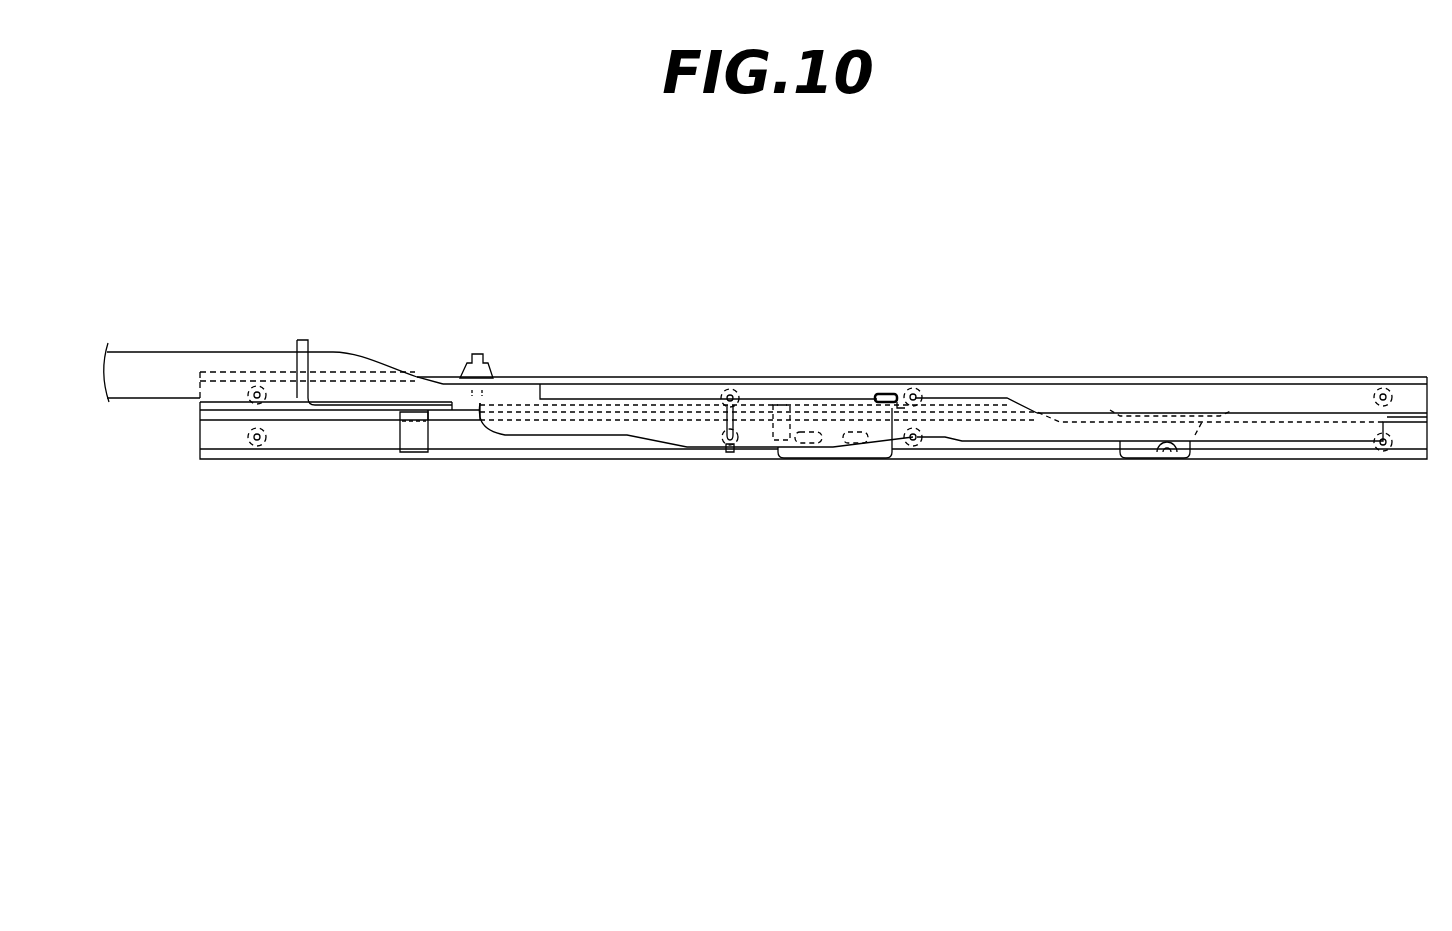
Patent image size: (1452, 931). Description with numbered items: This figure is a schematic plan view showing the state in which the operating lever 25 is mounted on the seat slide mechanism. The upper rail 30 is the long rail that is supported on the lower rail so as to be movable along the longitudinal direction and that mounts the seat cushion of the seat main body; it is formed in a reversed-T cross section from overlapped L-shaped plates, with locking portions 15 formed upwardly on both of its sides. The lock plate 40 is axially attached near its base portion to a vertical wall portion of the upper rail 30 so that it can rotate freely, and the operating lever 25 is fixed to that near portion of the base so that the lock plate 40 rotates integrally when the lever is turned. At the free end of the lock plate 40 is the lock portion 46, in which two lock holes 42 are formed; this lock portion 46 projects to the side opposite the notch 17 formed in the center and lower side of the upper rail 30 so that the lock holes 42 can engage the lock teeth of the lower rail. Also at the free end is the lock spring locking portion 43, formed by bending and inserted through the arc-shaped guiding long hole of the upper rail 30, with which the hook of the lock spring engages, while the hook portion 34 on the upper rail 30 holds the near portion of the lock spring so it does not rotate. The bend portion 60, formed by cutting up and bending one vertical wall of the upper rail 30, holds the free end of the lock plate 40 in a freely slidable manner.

The locking portions 15 is at (1345, 377).
The notch 17 is at (783, 397).
The operating lever 25 is at (163, 372).
The upper rail 30 is at (1138, 377).
The hook portion 34 is at (412, 428).
The lock plate 40 is at (327, 403).
The lock holes 42 is at (803, 458).
The lock spring locking portion 43 is at (728, 457).
The lock portion 46 is at (884, 457).
The bend portion 60 is at (886, 394).